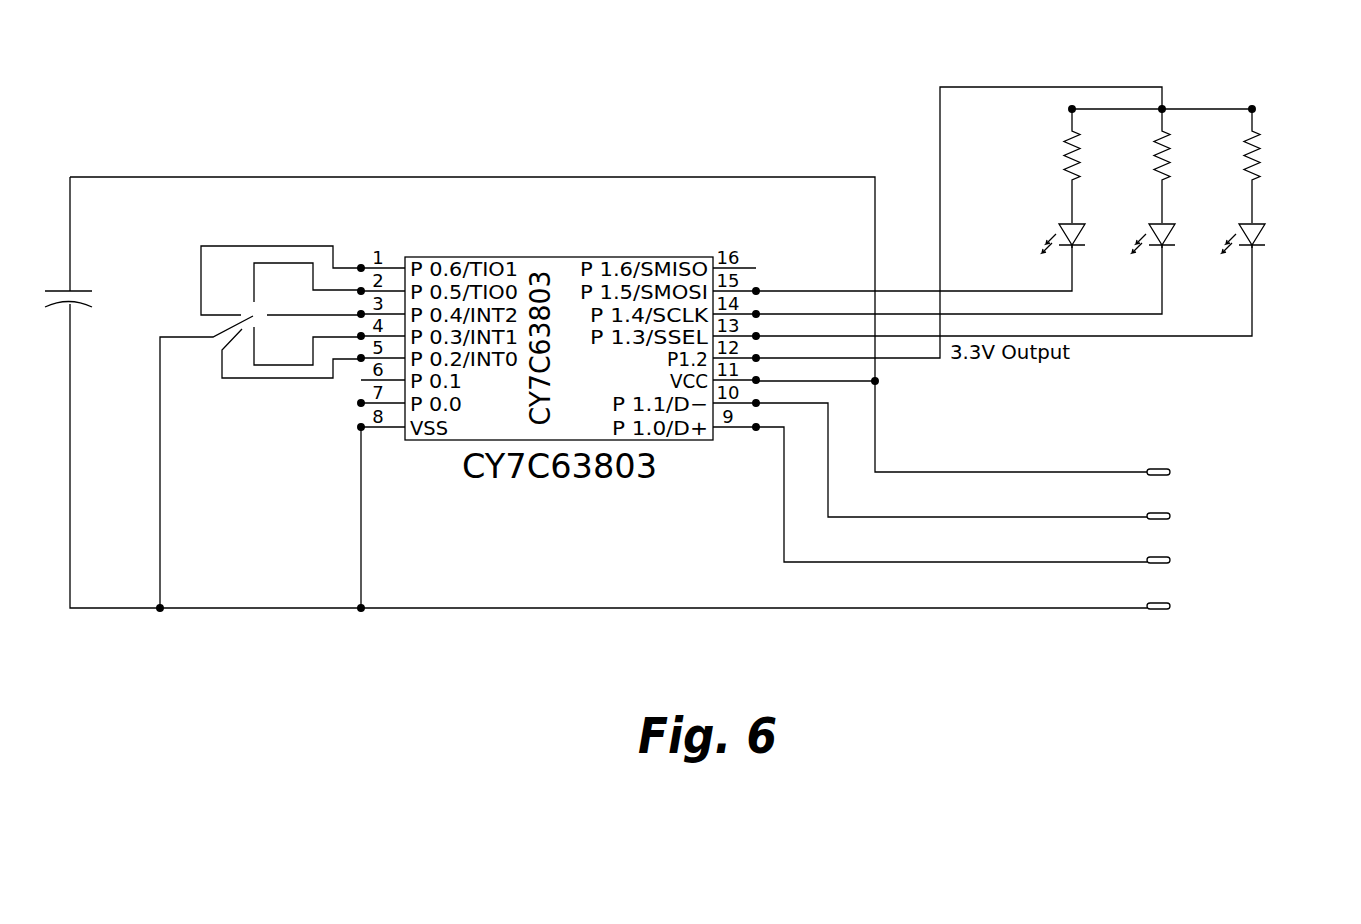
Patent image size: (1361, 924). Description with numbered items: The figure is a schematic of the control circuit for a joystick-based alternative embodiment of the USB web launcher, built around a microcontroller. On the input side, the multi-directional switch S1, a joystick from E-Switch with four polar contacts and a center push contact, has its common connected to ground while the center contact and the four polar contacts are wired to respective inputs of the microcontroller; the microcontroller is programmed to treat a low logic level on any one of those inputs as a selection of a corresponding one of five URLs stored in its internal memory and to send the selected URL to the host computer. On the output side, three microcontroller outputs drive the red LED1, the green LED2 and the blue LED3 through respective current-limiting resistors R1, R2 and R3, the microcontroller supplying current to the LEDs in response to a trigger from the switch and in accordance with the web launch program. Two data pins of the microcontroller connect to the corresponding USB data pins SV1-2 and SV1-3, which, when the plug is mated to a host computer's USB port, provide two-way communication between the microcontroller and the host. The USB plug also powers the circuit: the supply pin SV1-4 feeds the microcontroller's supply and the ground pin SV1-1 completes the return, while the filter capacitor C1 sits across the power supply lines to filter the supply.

The filter capacitor C1 is at (91, 299).
The switch S1 is at (260, 398).
The current-limiting resistor R1 is at (1264, 164).
The current-limiting resistor R2 is at (1174, 164).
The current-limiting resistor R3 is at (1084, 164).
The red LED LED1 is at (1263, 212).
The green LED LED2 is at (1173, 208).
The blue LED LED3 is at (1083, 212).
The USB plug ground pin SV1-1 is at (1242, 606).
The USB plug data pin SV1-2 is at (1244, 560).
The USB plug data pin SV1-3 is at (1244, 516).
The USB plug power pin SV1-4 is at (1244, 472).